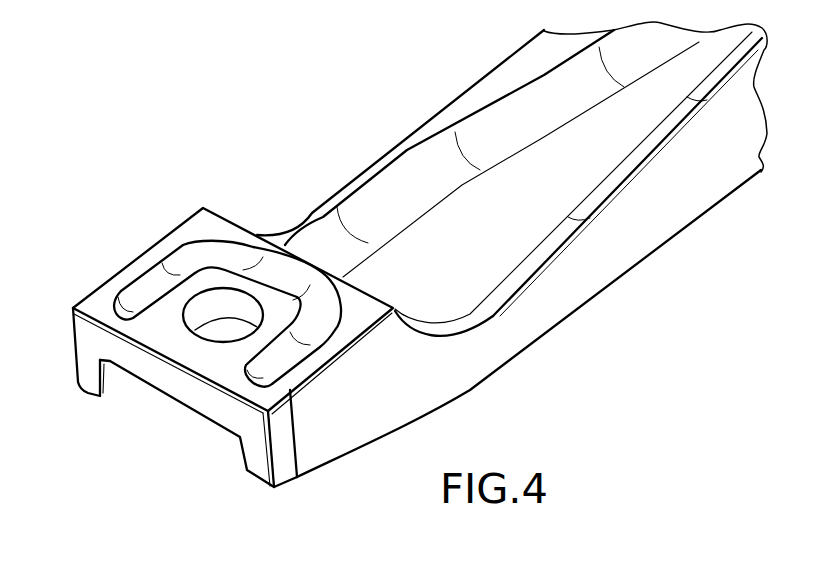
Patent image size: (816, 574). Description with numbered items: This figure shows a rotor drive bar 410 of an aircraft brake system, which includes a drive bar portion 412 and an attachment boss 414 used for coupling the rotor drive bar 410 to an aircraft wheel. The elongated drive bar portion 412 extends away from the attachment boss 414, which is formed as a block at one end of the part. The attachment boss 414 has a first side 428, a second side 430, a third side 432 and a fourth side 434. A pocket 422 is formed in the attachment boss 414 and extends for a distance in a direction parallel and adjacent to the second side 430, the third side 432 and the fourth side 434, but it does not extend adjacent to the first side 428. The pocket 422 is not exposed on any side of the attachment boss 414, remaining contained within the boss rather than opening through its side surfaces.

The rotor drive bar 410 is at (394, 150).
The drive bar portion 412 is at (515, 53).
The attachment boss 414 is at (296, 480).
The pocket 422 is at (170, 275).
The first side 428 is at (145, 368).
The second side 430 is at (380, 349).
The third side 432 is at (363, 289).
The fourth side 434 is at (93, 292).